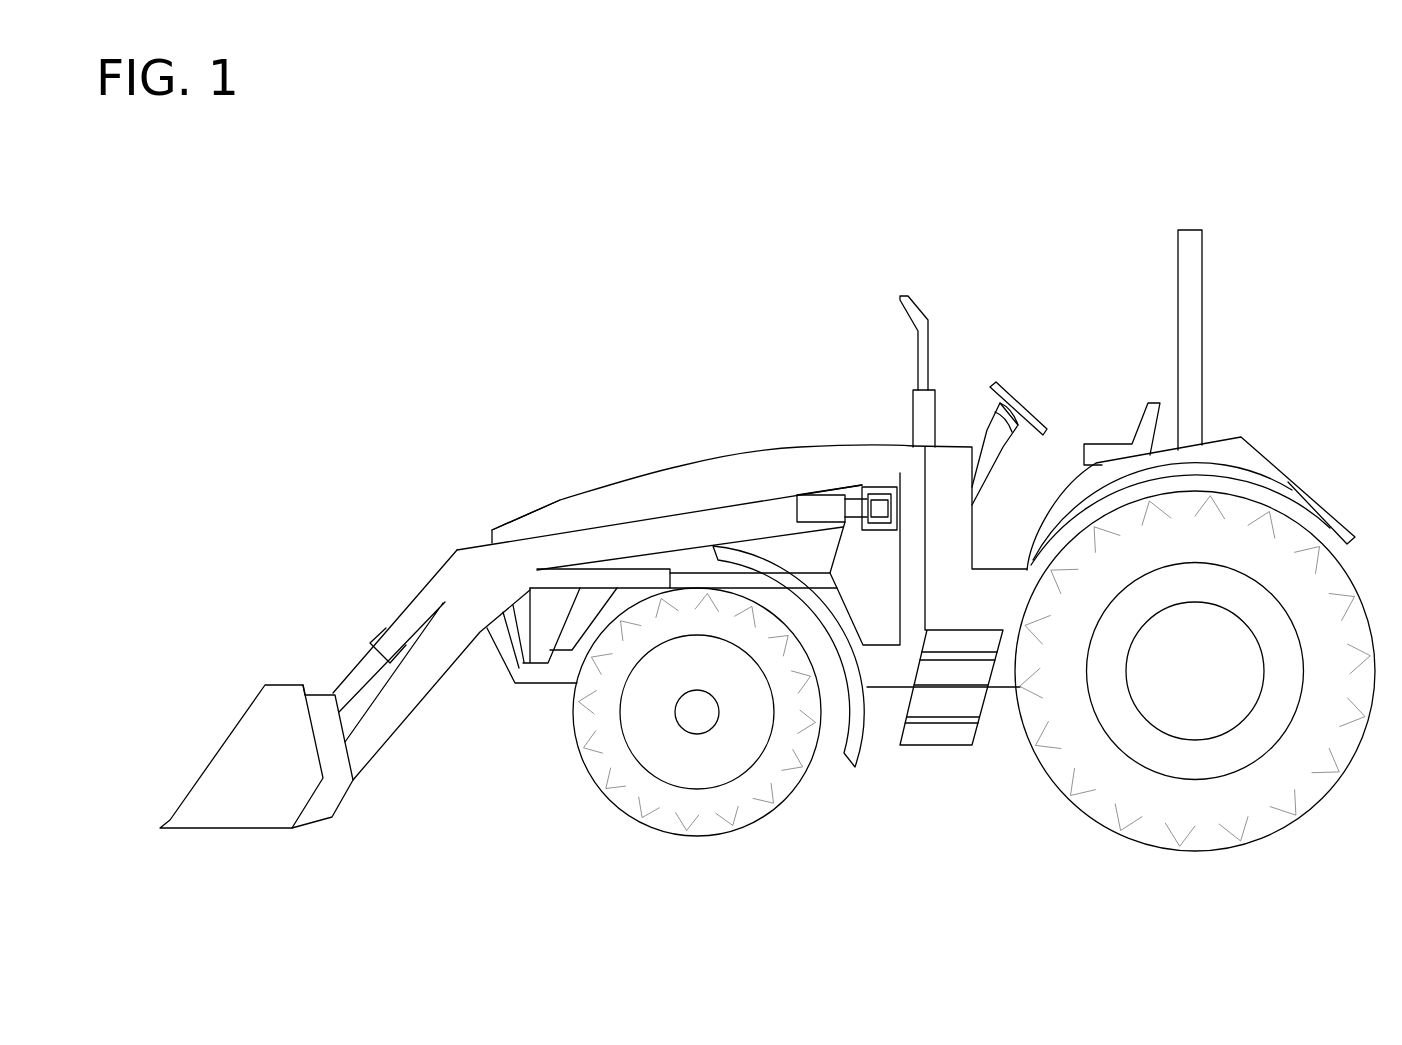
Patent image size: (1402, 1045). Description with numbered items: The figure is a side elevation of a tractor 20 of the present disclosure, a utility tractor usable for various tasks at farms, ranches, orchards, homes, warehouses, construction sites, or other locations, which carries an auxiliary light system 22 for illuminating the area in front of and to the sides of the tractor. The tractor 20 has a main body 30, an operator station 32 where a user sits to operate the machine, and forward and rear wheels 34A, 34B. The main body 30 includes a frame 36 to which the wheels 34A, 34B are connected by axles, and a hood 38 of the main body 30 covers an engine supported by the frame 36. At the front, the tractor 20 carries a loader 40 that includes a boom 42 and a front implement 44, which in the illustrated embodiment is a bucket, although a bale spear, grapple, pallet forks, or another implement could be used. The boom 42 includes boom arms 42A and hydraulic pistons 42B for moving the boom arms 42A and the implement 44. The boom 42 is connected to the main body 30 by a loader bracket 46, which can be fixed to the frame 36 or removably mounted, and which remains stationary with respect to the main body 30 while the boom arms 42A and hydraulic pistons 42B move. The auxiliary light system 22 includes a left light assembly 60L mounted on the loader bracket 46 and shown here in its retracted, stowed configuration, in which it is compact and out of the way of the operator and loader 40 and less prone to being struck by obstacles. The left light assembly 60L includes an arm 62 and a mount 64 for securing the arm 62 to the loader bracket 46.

The tractor 20 is at (1325, 182).
The auxiliary light system 22 is at (746, 292).
The main body 30 is at (707, 452).
The operator station 32 is at (1085, 368).
The forward wheels 34A is at (713, 835).
The rear wheels 34B is at (1190, 851).
The frame 36 is at (885, 673).
The hood 38 is at (602, 497).
The loader 40 is at (282, 476).
The boom 42 is at (460, 545).
The boom arms 42A is at (670, 523).
The hydraulic pistons 42B is at (628, 575).
The front implement 44 is at (252, 758).
The loader bracket 46 is at (875, 600).
The left light assembly 60L is at (837, 470).
The arm 62 is at (810, 493).
The mount 64 is at (878, 487).